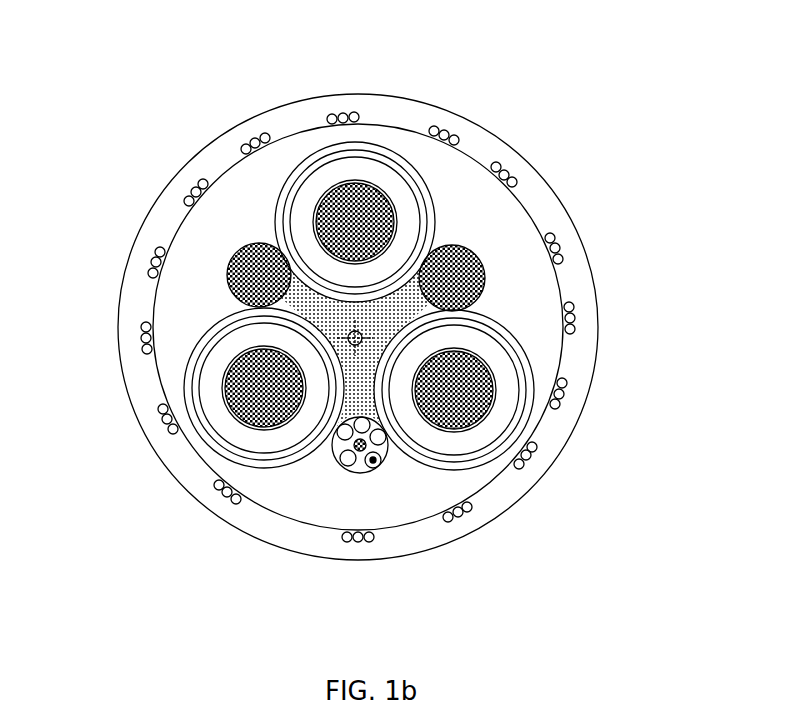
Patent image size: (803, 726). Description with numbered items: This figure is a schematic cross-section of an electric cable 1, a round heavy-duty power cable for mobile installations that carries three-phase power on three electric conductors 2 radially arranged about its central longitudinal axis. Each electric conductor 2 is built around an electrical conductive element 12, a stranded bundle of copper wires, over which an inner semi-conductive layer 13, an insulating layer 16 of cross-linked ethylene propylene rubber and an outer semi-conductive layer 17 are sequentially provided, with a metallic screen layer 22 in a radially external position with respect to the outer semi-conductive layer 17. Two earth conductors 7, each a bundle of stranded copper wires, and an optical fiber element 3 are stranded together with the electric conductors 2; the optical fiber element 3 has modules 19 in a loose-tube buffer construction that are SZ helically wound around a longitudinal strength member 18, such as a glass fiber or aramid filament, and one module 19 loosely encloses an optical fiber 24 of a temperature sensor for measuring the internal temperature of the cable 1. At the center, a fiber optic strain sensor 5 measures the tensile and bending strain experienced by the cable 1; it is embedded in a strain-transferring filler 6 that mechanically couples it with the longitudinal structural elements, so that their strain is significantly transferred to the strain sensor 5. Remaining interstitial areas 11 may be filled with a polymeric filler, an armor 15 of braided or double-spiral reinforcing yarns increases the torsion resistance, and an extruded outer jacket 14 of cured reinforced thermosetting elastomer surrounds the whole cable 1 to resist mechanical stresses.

The electric cable 1 is at (503, 106).
The electric conductor 2 is at (374, 146).
The optical fiber element 3 is at (338, 474).
The fiber optic strain sensor 5 is at (341, 320).
The strain-transferring filler 6 is at (364, 383).
The earth conductor 7 is at (244, 250).
The interstitial area 11 is at (173, 309).
The electrical conductive element 12 is at (233, 408).
The inner semi-conductive layer 13 is at (495, 392).
The outer jacket 14 is at (128, 272).
The armor 15 is at (160, 434).
The insulating layer 16 is at (503, 417).
The outer semi-conductive layer 17 is at (488, 447).
The longitudinal strength member 18 is at (337, 457).
The module 19 is at (388, 463).
The metallic screen layer 22 is at (480, 462).
The optical fiber 24 is at (368, 467).